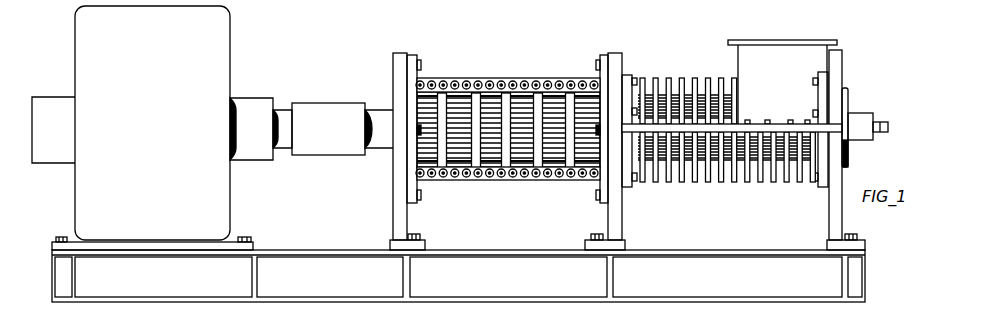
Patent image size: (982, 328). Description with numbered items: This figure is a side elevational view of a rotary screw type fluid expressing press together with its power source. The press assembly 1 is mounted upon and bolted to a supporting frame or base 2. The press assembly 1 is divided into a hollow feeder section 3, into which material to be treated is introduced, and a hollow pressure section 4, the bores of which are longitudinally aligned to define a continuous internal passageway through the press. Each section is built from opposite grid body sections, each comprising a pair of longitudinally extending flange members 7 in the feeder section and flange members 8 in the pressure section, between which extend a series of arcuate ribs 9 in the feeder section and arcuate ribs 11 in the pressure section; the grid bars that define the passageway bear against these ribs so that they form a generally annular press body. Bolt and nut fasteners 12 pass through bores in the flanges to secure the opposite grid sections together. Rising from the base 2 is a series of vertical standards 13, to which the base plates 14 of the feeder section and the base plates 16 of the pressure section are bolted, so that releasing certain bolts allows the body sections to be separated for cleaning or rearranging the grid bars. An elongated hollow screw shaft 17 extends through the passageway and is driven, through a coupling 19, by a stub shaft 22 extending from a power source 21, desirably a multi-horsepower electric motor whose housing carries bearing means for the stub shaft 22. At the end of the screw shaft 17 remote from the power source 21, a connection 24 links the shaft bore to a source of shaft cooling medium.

The press assembly 1 is at (868, 82).
The supporting frame or base 2 is at (708, 250).
The feeder section 3 is at (676, 80).
The pressure section 4 is at (505, 78).
The flange members 7 is at (765, 127).
The flange members 8 is at (540, 82).
The arcuate ribs 9 is at (718, 80).
The arcuate ribs 11 is at (478, 168).
The bolt and nut fasteners 12 is at (560, 178).
The vertical standards 13 is at (393, 202).
The base plates 14 is at (625, 80).
The base plates 16 is at (412, 62).
The screw shaft 17 is at (381, 118).
The coupling 19 is at (333, 118).
The power source 21 is at (200, 41).
The stub shaft 22 is at (283, 118).
The connection 24 is at (875, 120).